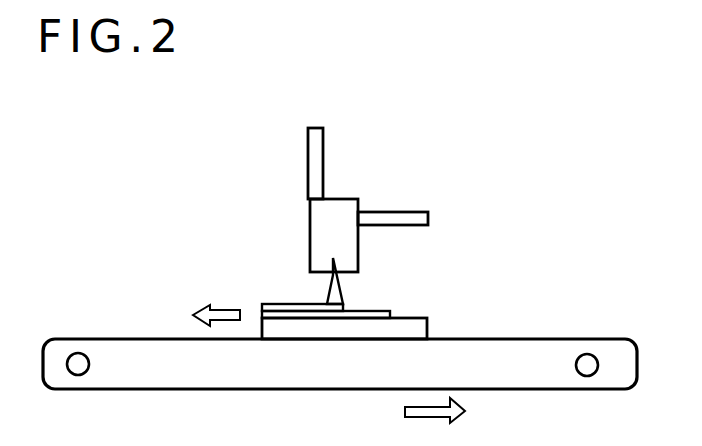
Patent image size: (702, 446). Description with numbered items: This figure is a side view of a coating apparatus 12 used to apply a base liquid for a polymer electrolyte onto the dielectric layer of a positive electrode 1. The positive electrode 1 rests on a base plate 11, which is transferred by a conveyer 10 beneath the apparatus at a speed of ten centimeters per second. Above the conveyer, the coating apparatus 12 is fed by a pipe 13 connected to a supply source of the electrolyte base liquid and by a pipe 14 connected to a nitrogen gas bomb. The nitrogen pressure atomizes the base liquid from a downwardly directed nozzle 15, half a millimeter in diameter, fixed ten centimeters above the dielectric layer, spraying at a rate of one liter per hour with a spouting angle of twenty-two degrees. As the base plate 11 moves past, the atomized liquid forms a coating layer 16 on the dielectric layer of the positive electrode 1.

The conveyer 10 is at (529, 356).
The base plate 11 is at (406, 328).
The coating apparatus 12 is at (317, 245).
The pipe 13 is at (315, 151).
The pipe 14 is at (405, 217).
The nozzle 15 is at (343, 282).
The coating layer 16 is at (270, 304).
The positive electrode 1 is at (308, 307).